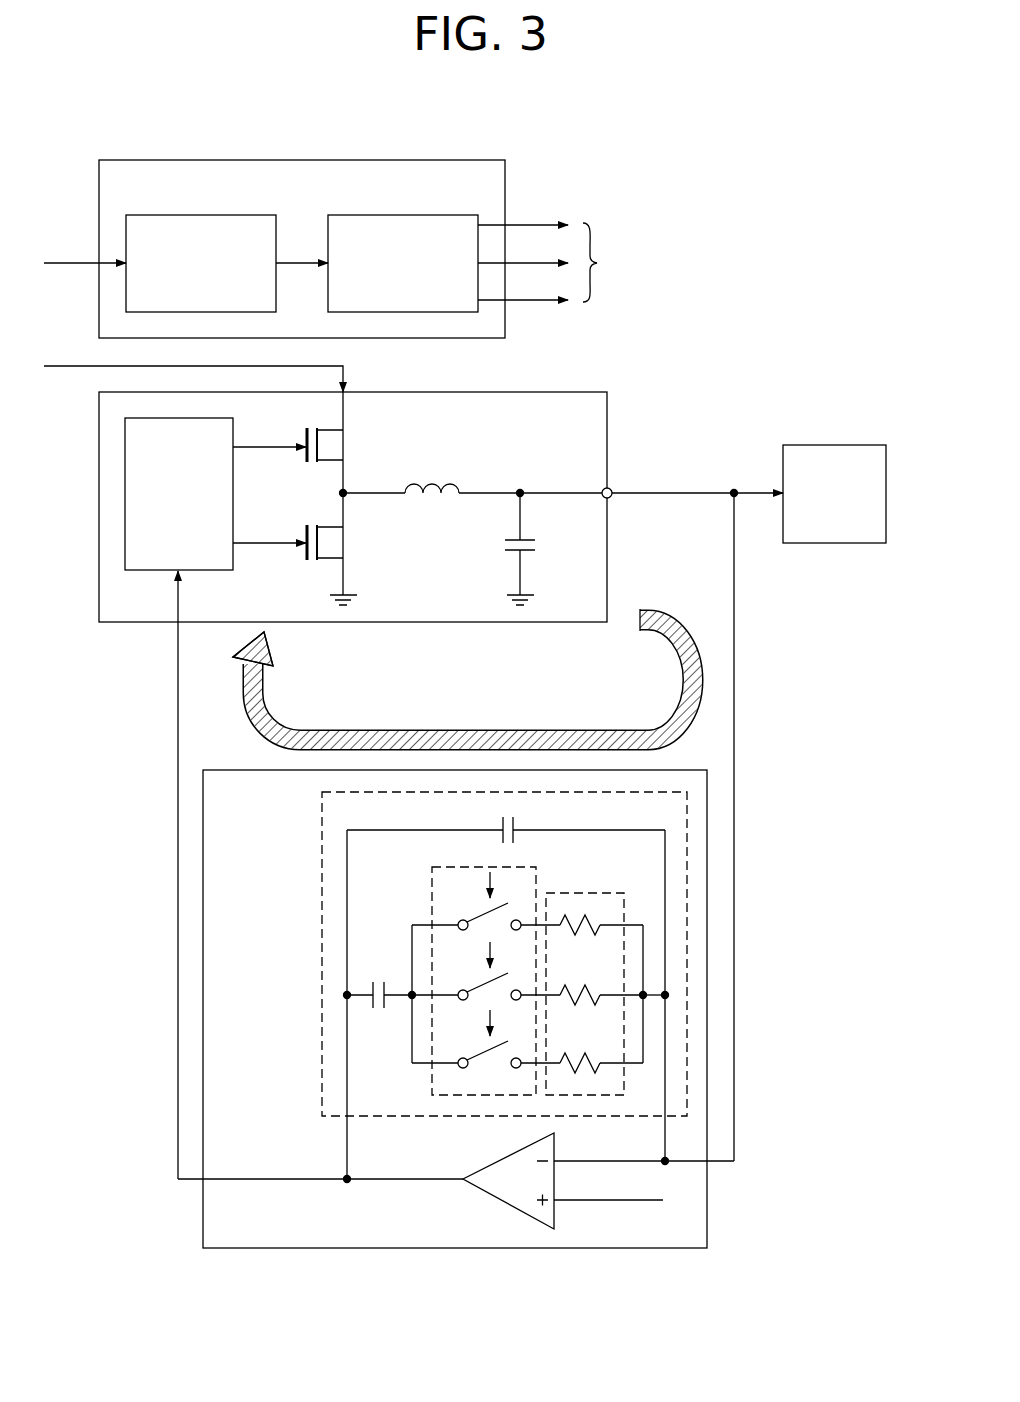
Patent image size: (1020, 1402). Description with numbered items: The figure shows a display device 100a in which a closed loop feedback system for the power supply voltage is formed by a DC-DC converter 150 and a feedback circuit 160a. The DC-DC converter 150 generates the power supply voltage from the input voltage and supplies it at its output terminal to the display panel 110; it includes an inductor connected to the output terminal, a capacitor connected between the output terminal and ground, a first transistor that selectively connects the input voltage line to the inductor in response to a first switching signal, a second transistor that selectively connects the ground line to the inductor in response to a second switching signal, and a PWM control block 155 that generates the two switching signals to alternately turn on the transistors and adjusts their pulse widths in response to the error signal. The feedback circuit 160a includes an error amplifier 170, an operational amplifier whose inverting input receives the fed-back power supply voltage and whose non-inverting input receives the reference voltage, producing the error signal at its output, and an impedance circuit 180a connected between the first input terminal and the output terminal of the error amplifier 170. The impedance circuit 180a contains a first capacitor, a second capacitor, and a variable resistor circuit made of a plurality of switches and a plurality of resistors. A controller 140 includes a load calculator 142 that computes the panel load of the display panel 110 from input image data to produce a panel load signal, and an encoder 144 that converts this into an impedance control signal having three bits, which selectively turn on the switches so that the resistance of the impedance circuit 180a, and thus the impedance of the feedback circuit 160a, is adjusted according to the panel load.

The display device 100a is at (787, 160).
The display panel 110 is at (836, 445).
The controller 140 is at (300, 160).
The load calculator 142 is at (183, 215).
The encoder 144 is at (417, 215).
The DC-DC converter 150 is at (607, 418).
The PWM control block 155 is at (125, 491).
The feedback circuit 160a is at (203, 1222).
The error amplifier 170 is at (505, 1158).
The impedance circuit 180a is at (322, 845).